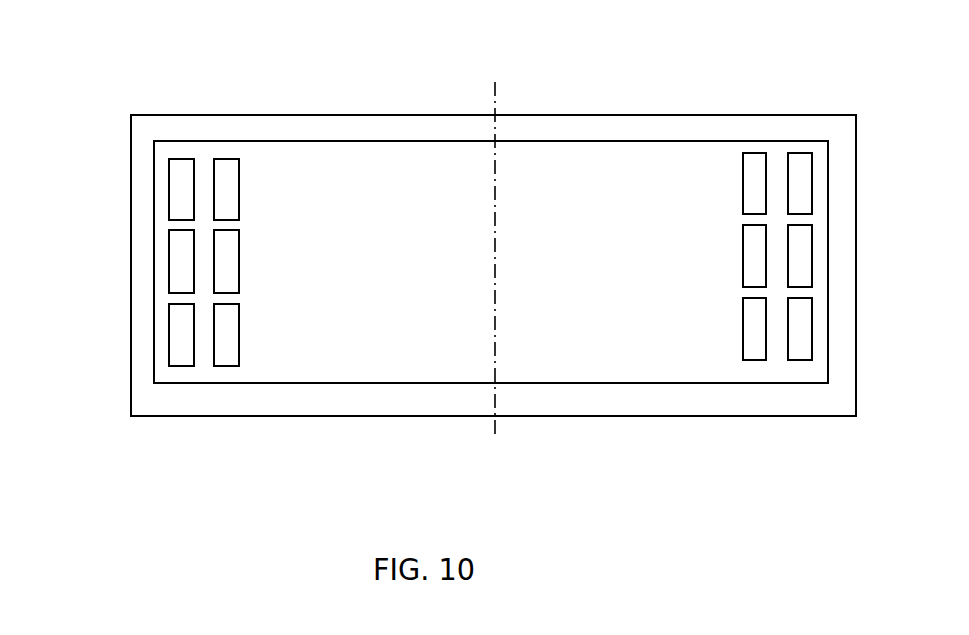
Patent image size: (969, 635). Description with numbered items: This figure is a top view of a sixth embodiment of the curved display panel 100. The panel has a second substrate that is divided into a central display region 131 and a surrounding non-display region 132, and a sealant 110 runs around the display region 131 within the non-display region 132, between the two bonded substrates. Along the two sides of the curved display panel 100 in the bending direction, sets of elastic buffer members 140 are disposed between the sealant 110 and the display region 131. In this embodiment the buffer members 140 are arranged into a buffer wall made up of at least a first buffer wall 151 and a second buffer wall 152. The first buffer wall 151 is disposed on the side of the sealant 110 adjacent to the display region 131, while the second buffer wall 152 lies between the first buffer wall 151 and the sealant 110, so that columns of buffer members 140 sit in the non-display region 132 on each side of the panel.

The curved display panel 100 is at (176, 88).
The sealant 110 is at (153, 252).
The display region 131 is at (527, 230).
The non-display region 132 is at (252, 363).
The buffer member 140 is at (183, 177).
The first buffer wall 151 is at (227, 350).
The second buffer wall 152 is at (183, 337).